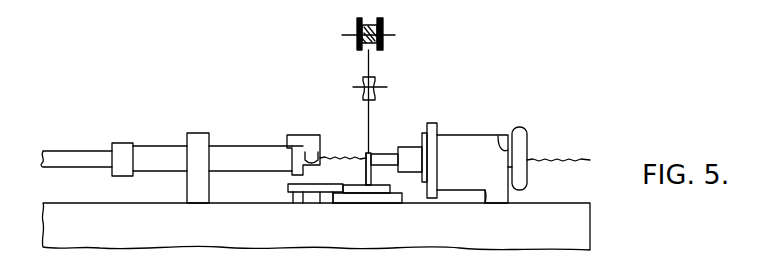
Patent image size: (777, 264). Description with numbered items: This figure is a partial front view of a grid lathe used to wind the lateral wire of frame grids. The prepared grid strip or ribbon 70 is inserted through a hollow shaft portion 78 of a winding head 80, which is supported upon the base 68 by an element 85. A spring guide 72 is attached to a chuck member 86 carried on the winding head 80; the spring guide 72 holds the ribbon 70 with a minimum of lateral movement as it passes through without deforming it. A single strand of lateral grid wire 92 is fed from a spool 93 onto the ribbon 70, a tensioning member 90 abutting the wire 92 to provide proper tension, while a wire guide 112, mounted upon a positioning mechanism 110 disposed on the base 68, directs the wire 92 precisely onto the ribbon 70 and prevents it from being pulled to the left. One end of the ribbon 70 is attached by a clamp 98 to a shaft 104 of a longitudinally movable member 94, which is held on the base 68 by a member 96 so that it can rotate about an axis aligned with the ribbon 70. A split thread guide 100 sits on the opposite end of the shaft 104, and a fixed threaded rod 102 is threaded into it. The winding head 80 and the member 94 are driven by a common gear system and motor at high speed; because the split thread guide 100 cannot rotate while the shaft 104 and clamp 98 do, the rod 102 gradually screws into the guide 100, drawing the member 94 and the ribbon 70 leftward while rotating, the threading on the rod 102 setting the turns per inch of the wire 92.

The base 68 is at (583, 230).
The grid strip or ribbon 70 is at (575, 158).
The spring guide 72 is at (383, 154).
The hollow shaft portion 78 is at (497, 137).
The winding head 80 is at (466, 135).
The element 85 is at (473, 196).
The chuck member 86 is at (405, 147).
The tensioning member 90 is at (377, 80).
The lateral grid wire 92 is at (372, 61).
The spool 93 is at (383, 21).
The longitudinally movable member 94 is at (240, 146).
The member 96 is at (200, 190).
The clamp 98 is at (306, 135).
The split thread guide 100 is at (117, 143).
The fixed threaded rod 102 is at (72, 151).
The shaft 104 is at (157, 146).
The positioning mechanism 110 is at (368, 196).
The wire guide 112 is at (372, 176).